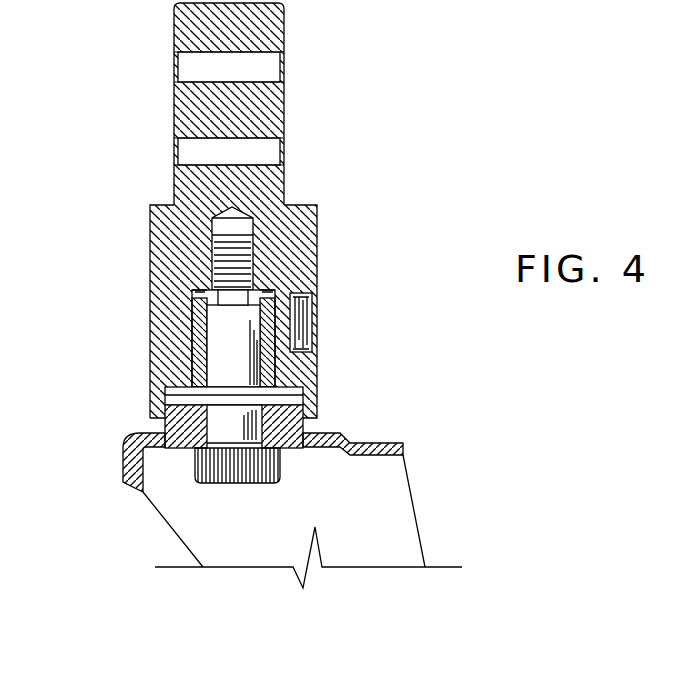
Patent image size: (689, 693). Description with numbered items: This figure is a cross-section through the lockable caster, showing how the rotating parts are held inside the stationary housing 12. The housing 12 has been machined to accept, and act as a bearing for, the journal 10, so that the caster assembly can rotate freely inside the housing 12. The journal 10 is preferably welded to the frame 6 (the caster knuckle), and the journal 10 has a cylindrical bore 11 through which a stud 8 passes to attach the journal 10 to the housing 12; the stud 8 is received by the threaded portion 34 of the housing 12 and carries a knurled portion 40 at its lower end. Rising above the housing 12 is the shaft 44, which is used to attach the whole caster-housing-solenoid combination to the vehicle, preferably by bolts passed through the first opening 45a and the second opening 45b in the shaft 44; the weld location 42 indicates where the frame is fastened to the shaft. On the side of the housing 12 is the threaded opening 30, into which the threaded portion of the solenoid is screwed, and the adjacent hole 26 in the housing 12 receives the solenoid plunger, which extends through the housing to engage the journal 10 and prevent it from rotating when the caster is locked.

The frame 6 is at (403, 445).
The stud 8 is at (218, 334).
The journal 10 is at (150, 422).
The bore 11 is at (218, 354).
The housing 12 is at (312, 233).
The hole 26 is at (293, 331).
The threaded opening 30 is at (305, 304).
The threaded portion 34 is at (212, 244).
The knurled portion 40 is at (282, 470).
The weld location 42 is at (307, 428).
The shaft 44 is at (174, 105).
The first opening 45a is at (275, 68).
The second opening 45b is at (275, 150).